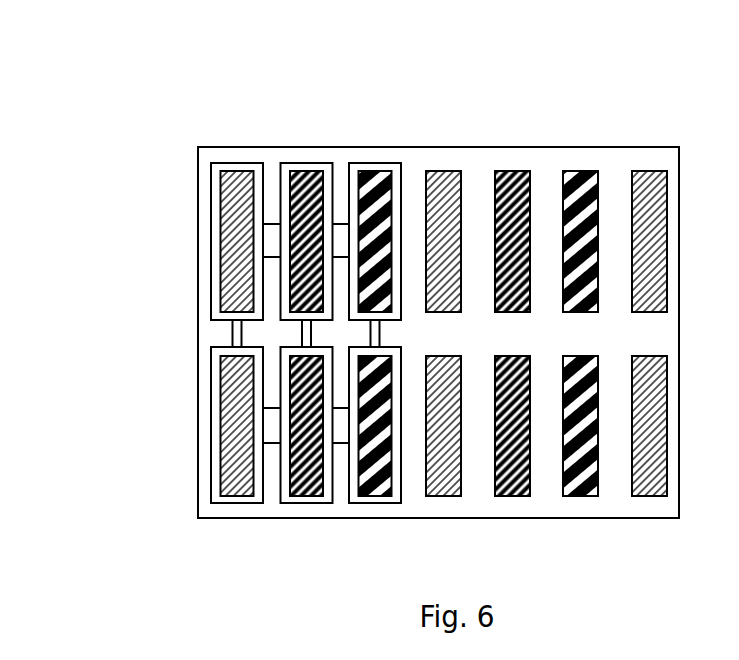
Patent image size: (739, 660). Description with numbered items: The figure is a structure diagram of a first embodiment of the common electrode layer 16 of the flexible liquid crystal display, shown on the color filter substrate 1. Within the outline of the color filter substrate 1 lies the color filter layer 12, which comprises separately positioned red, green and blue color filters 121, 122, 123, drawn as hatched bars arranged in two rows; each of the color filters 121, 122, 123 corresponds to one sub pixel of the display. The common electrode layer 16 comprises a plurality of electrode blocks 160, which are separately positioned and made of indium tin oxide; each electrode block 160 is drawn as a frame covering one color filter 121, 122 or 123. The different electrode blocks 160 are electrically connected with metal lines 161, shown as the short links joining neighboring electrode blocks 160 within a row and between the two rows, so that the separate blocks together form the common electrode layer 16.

The color filter substrate 1 is at (650, 160).
The color filter layer 12 is at (314, 178).
The red color filter 121 is at (247, 176).
The green color filter 122 is at (313, 176).
The blue color filter 123 is at (383, 198).
The common electrode layer 16 is at (212, 333).
The electrode block 160 is at (215, 268).
The metal line 161 is at (237, 335).